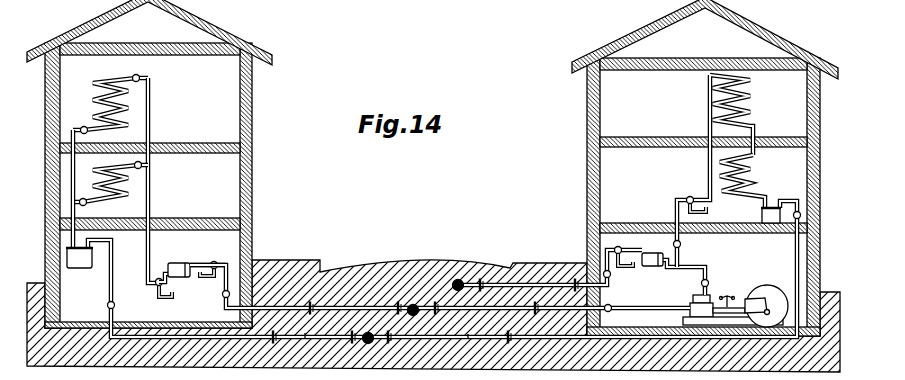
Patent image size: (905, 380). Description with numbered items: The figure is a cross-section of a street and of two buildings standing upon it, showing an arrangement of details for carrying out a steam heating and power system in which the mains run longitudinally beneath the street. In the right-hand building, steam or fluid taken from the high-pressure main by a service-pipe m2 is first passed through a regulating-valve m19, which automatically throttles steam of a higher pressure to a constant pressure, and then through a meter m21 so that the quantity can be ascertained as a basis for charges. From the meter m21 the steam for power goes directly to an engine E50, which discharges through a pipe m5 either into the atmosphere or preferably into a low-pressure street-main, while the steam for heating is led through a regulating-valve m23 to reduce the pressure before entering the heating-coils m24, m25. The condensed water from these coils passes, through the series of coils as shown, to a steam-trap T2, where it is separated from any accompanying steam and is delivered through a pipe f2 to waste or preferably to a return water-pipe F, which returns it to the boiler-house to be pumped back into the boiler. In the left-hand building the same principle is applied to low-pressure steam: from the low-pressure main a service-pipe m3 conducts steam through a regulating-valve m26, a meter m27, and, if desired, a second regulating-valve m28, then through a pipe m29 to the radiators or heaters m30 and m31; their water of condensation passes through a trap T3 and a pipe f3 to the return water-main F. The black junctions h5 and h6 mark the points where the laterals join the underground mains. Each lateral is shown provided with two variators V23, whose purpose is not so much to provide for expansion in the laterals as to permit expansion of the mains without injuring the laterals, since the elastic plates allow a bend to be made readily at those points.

The radiator m30 is at (110, 110).
The radiator m31 is at (110, 188).
The pipe m29 is at (164, 180).
The second regulating-valve m28 is at (158, 297).
The meter m27 is at (175, 264).
The regulating-valve m26 is at (212, 260).
The trap T3 is at (79, 199).
The service-pipe m3 is at (301, 287).
The pipe m5 is at (551, 304).
The service-pipe m2 is at (550, 268).
The hydrant/junction h6 is at (413, 298).
The hydrant/junction h5 is at (458, 270).
The return water-pipe F is at (367, 347).
The pipe f3 is at (305, 330).
The pipe f2 is at (468, 332).
The variator V23 is at (427, 311).
The meter m21 is at (656, 265).
The regulating-valve m19 is at (631, 270).
The regulating-valve m23 is at (689, 198).
The heating-coil m24 is at (744, 115).
The heating-coil m25 is at (750, 181).
The steam-trap T2 is at (771, 215).
The engine E50 is at (760, 294).